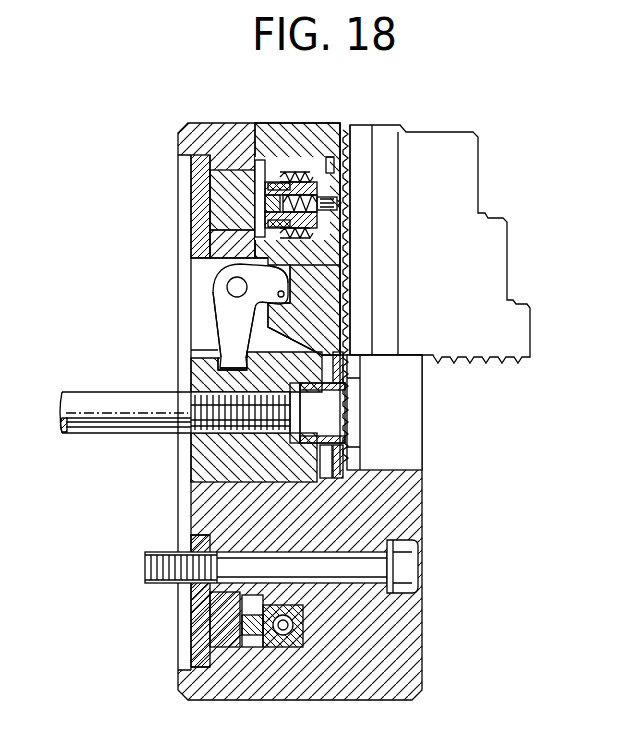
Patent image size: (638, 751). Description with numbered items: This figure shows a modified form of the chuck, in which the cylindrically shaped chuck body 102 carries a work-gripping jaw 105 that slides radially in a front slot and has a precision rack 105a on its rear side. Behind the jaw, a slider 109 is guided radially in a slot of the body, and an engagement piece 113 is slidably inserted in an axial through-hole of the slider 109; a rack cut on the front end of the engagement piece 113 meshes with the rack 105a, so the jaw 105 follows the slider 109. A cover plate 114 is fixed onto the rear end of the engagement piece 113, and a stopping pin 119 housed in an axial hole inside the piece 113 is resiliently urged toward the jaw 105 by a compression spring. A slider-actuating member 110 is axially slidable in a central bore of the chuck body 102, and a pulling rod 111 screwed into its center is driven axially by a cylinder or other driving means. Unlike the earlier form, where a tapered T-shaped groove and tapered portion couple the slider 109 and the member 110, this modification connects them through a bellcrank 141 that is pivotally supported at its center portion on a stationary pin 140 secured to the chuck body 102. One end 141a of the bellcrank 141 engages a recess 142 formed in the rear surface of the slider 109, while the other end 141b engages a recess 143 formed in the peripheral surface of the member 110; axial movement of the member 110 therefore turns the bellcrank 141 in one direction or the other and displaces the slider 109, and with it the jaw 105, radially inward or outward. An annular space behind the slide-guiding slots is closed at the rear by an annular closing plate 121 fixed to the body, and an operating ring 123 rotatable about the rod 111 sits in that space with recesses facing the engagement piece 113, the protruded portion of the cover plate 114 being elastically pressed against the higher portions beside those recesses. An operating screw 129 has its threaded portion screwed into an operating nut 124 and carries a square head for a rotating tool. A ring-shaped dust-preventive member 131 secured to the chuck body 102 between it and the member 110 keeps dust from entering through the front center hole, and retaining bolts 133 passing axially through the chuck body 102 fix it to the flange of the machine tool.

The chuck body 102 is at (395, 683).
The work-gripping jaw 105 is at (455, 154).
The precision rack 105a is at (350, 318).
The slider 109 is at (281, 137).
The slider-actuating member 110 is at (205, 447).
The pulling rod 111 is at (96, 413).
The engagement piece 113 is at (330, 156).
The cover plate 114 is at (265, 203).
The stopping pin 119 is at (342, 207).
The annular closing plate 121 is at (199, 174).
The operating ring 123 is at (215, 620).
The operating nut 124 is at (300, 647).
The operating screw 129 is at (283, 632).
The ring-shaped dust-preventive member 131 is at (340, 442).
The retaining bolts 133 is at (375, 566).
The lever 140 is at (228, 284).
The bellcrank 141 is at (228, 304).
The one end of the bellcrank 141a is at (291, 271).
The other end of the bellcrank 141b is at (221, 361).
The recess 142 is at (290, 297).
The recess 143 is at (217, 372).